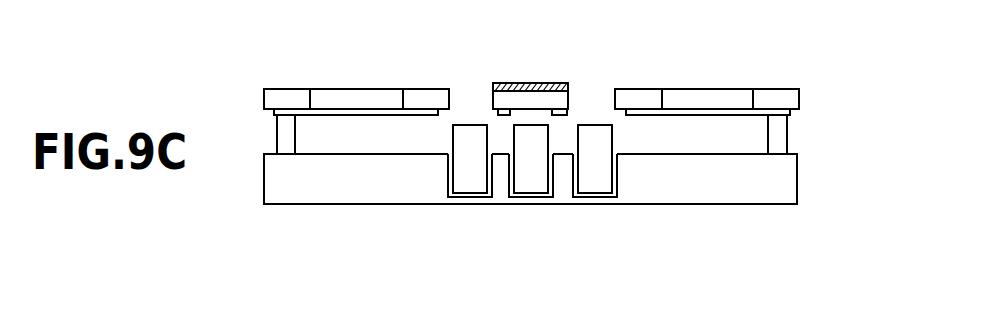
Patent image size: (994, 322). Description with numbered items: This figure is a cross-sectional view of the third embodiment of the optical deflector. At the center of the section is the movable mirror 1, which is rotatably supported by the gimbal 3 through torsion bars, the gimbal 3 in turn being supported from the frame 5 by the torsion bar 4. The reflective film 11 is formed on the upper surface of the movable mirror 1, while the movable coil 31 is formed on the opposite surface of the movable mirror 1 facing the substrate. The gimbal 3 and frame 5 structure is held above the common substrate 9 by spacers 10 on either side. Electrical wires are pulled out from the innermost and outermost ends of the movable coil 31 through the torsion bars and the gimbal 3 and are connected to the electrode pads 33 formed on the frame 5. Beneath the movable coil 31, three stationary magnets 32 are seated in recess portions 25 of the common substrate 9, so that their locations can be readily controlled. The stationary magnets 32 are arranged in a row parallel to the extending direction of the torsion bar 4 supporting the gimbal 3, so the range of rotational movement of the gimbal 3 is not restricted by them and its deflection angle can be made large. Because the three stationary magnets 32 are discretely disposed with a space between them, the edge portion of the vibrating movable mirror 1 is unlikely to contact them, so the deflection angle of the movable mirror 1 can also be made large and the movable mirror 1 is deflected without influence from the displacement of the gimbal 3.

The movable mirror 1 is at (538, 67).
The gimbal 3 is at (425, 89).
The torsion bar 4 is at (348, 89).
The frame 5 is at (780, 100).
The common substrate 9 is at (318, 188).
The spacer 10 is at (285, 142).
The reflective film 11 is at (530, 83).
The recess portion 25 is at (462, 196).
The movable coil 31 is at (566, 109).
The stationary magnet 32 is at (587, 187).
The electrode pad 33 is at (790, 115).